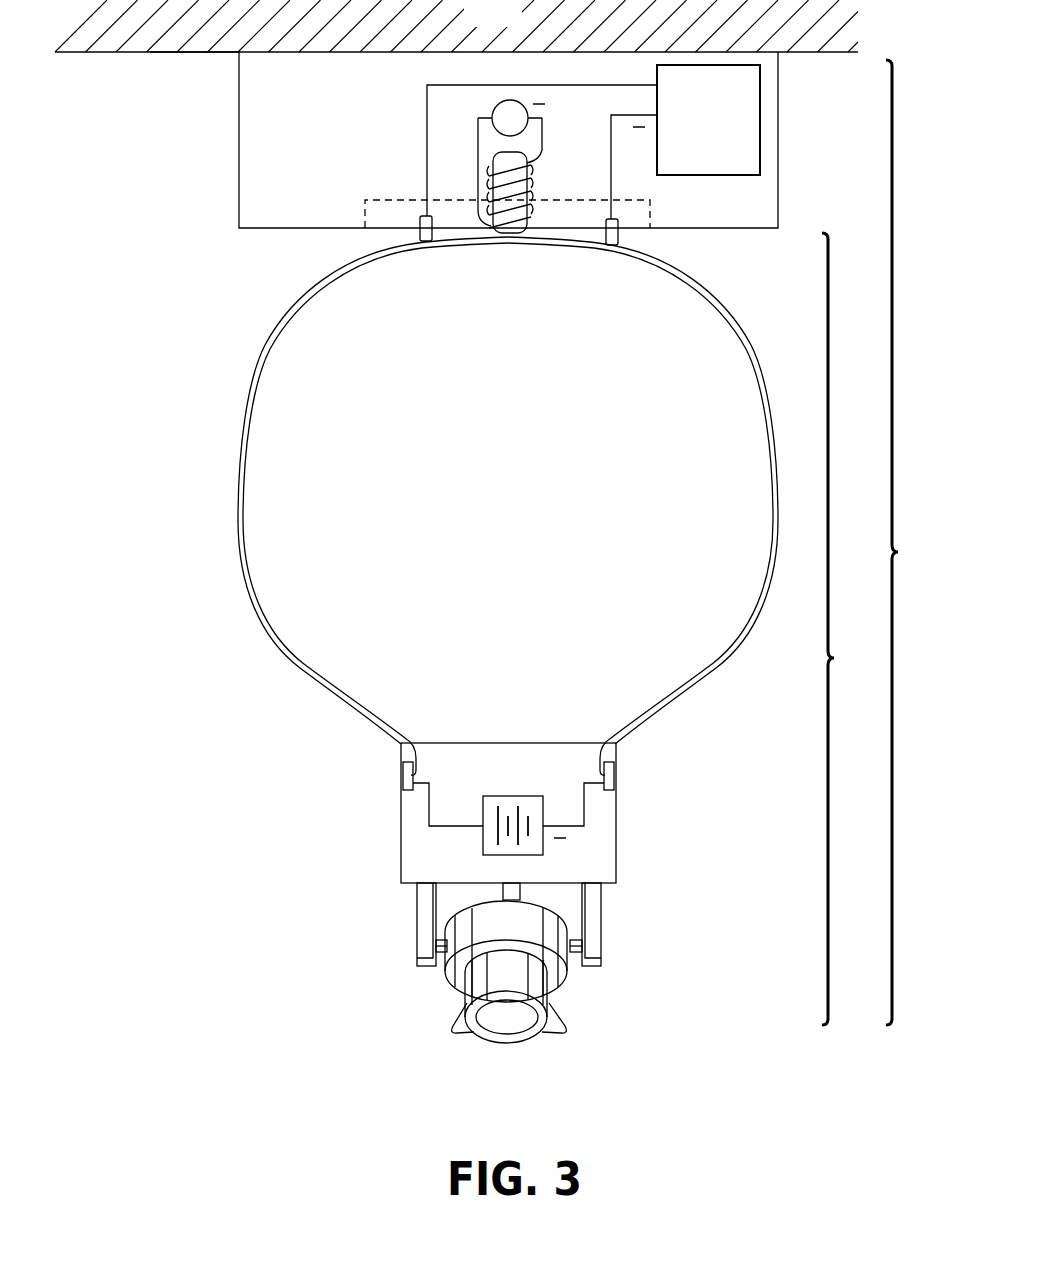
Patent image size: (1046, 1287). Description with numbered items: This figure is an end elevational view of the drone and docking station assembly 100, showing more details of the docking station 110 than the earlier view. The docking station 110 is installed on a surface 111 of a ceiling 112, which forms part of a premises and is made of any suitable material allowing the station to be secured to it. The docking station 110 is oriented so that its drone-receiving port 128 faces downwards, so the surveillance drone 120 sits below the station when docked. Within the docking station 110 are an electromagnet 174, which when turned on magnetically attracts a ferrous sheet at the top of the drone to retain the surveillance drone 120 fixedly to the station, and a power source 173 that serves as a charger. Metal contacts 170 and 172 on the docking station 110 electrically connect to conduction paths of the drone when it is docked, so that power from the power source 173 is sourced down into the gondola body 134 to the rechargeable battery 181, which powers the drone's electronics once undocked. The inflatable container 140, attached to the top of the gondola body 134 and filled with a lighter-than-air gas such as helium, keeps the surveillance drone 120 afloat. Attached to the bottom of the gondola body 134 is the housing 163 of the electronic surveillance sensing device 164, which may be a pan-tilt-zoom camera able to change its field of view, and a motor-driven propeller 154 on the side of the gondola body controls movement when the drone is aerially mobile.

The drone and docking station assembly 100 is at (915, 542).
The docking station 110 is at (305, 100).
The surface 111 is at (163, 53).
The ceiling 112 is at (514, 21).
The surveillance drone 120 is at (851, 629).
The drone-receiving port 128 is at (640, 200).
The gondola body 134 is at (616, 833).
The inflatable container 140 is at (537, 507).
The motor-driven propeller 154 is at (563, 1020).
The housing 163 is at (455, 983).
The electronic surveillance sensing device 164 is at (420, 1042).
The metal contact 170 is at (418, 238).
The metal contact 172 is at (620, 237).
The power source 173 is at (688, 152).
The electromagnet 174 is at (465, 139).
The rechargeable battery 181 is at (510, 796).